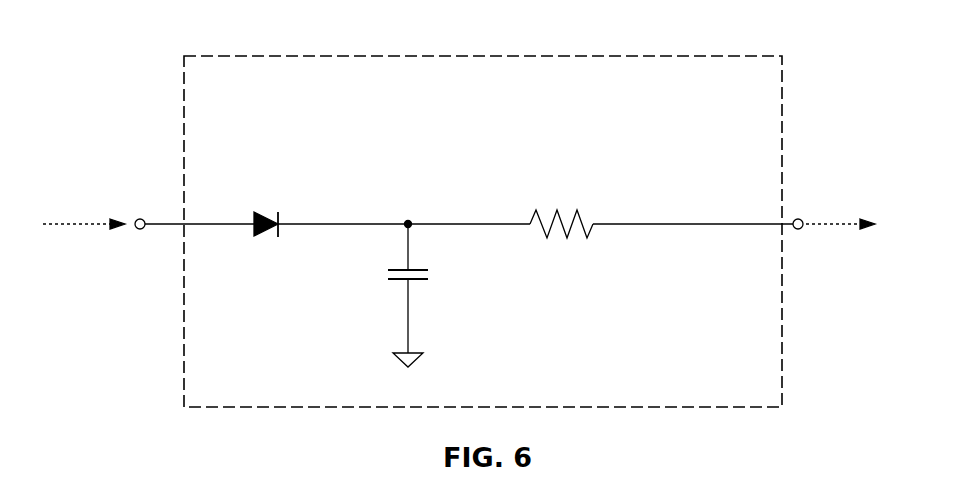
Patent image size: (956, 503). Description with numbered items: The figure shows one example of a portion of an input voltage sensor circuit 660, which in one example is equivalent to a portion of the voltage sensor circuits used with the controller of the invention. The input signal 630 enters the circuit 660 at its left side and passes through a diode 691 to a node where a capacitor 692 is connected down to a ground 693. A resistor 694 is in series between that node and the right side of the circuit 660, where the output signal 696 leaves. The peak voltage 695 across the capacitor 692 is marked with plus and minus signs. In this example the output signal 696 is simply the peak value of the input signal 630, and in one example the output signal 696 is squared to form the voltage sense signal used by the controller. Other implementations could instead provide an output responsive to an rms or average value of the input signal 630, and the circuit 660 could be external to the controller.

The circuit 660 is at (314, 53).
The input signal 630 is at (90, 205).
The diode 691 is at (251, 258).
The capacitor 692 is at (383, 273).
The ground 693 is at (430, 362).
The resistor 694 is at (553, 205).
The peak voltage Vpk 695 is at (488, 281).
The output signal 696 is at (832, 201).